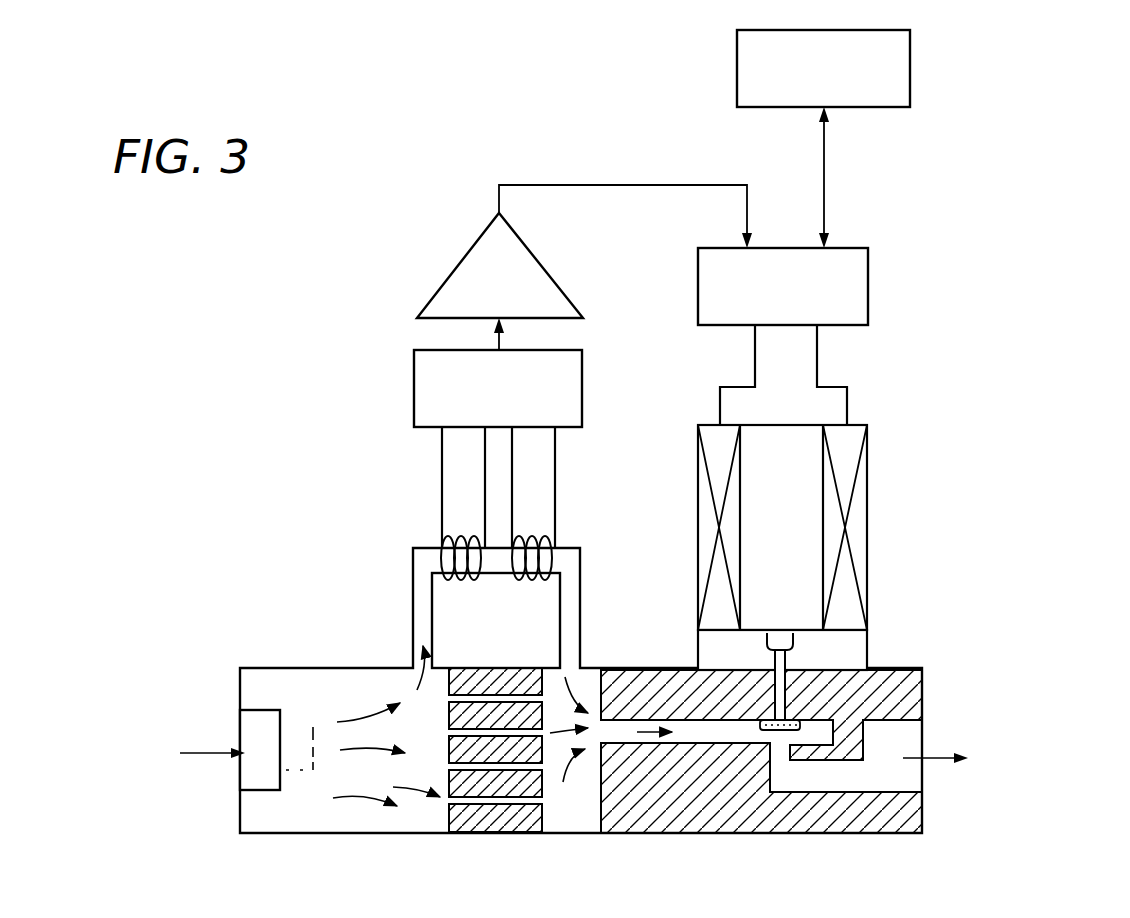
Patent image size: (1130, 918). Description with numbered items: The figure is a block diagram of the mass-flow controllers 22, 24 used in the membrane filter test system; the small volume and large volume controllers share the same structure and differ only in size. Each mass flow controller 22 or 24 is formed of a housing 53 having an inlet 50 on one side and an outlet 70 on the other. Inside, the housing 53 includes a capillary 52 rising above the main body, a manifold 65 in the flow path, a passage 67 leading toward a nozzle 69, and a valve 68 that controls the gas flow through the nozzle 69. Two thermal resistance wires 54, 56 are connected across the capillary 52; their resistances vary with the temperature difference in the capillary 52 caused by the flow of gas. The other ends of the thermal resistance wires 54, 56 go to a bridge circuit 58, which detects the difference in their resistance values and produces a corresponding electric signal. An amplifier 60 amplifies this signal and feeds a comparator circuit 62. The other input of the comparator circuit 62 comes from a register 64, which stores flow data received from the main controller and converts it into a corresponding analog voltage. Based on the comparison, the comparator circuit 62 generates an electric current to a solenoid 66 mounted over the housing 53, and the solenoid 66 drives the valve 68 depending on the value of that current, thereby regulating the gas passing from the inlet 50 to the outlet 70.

The mass-flow controller 22 is at (1037, 293).
The mass-flow controller 24 is at (965, 331).
The inlet 50 is at (195, 752).
The capillary 52 is at (420, 595).
The housing 53 is at (273, 667).
The thermal resistance wire 54 is at (450, 537).
The thermal resistance wire 56 is at (546, 537).
The bridge circuit 58 is at (513, 397).
The amplifier 60 is at (515, 288).
The comparator circuit 62 is at (803, 300).
The register 64 is at (841, 78).
The manifold 65 is at (517, 820).
The solenoid 66 is at (868, 480).
The passage 67 is at (707, 733).
The valve 68 is at (760, 729).
The nozzle 69 is at (781, 755).
The outlet 70 is at (940, 752).